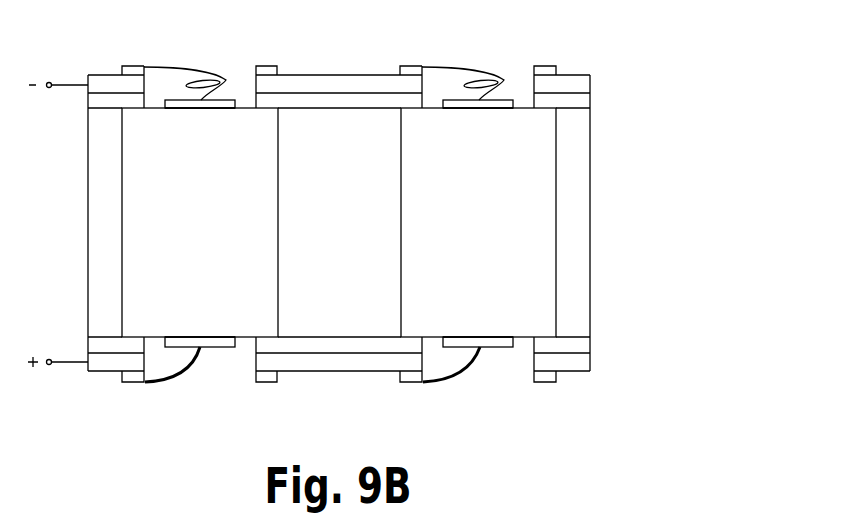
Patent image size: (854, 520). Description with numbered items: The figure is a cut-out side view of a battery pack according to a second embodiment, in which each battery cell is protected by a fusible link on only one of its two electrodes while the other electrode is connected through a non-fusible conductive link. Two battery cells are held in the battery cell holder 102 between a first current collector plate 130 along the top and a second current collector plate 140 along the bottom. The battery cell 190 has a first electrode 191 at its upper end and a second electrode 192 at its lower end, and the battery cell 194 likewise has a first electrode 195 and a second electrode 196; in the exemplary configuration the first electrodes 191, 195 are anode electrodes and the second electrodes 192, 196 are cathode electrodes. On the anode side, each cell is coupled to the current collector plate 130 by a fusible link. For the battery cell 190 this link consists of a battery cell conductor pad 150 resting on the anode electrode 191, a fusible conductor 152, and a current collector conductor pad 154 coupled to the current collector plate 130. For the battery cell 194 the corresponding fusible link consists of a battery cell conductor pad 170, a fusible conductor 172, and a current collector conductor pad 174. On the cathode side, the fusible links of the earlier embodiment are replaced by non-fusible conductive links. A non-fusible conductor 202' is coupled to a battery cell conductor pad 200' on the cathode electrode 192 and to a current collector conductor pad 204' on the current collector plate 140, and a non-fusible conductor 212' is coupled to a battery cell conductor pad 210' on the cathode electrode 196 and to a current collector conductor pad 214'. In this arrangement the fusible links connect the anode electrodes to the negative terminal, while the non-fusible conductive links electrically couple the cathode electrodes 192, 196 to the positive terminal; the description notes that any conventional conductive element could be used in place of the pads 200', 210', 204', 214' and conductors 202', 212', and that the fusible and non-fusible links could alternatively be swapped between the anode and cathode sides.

The battery cell holder 102 is at (590, 200).
The first current collector plate 130 is at (590, 82).
The second current collector plate 140 is at (590, 362).
The current collector conductor pad 154 is at (130, 66).
The current collector conductor pad 174 is at (403, 66).
The fusible conductor 152 is at (178, 67).
The fusible conductor 172 is at (460, 67).
The battery cell conductor pad 150 is at (227, 100).
The battery cell conductor pad 170 is at (507, 100).
The battery cell 190 is at (200, 222).
The first electrode 191 is at (203, 109).
The second electrode 192 is at (203, 337).
The battery cell 194 is at (478, 222).
The first electrode 195 is at (478, 109).
The second electrode 196 is at (470, 337).
The battery cell conductor pad 200' is at (216, 381).
The battery cell conductor pad 210' is at (496, 384).
The non-fusible conductor 202' is at (175, 395).
The non-fusible conductor 212' is at (451, 395).
The current collector conductor pad 204' is at (211, 397).
The current collector conductor pad 214' is at (489, 397).